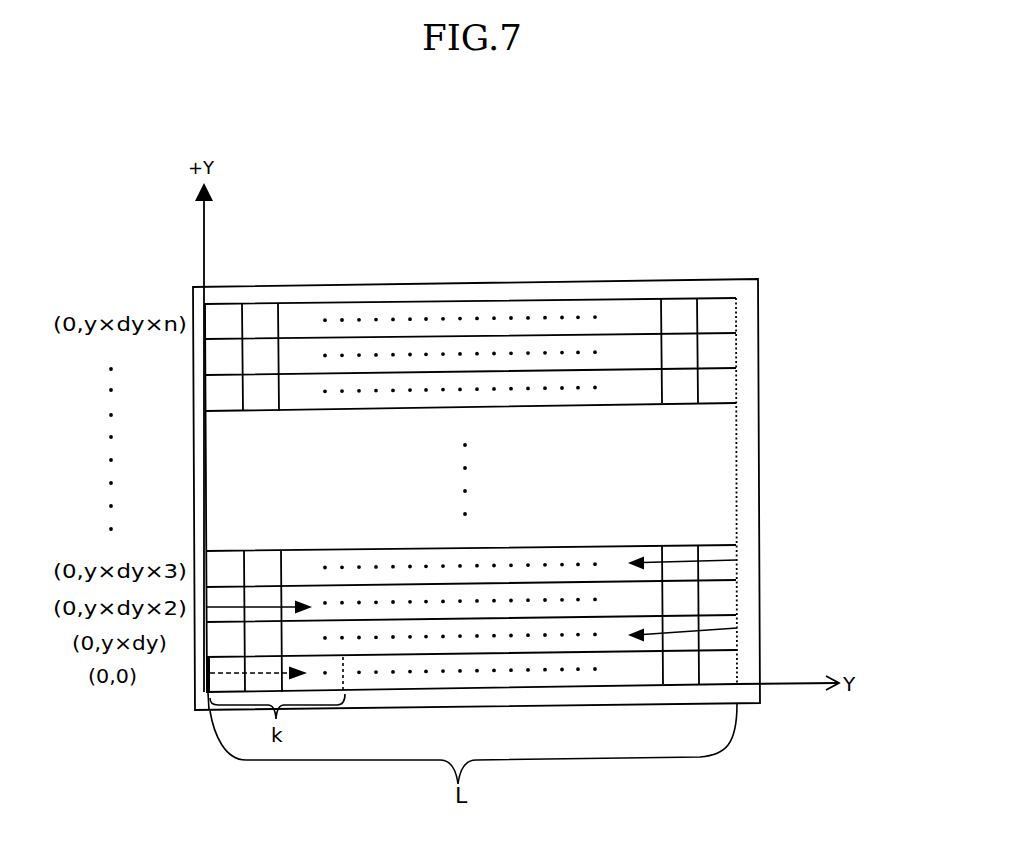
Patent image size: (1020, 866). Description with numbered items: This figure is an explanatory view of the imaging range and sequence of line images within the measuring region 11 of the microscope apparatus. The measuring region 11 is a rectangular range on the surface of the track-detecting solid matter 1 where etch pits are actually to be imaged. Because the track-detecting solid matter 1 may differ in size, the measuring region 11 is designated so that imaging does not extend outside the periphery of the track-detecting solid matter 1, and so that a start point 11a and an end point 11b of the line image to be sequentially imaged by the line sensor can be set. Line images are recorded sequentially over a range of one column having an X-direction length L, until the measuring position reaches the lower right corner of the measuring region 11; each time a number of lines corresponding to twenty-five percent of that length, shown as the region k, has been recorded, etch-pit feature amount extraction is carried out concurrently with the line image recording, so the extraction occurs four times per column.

The track-detecting solid matter 1 is at (758, 510).
The measuring region 11 is at (737, 435).
The start point 11a is at (209, 710).
The end point 11b is at (734, 294).